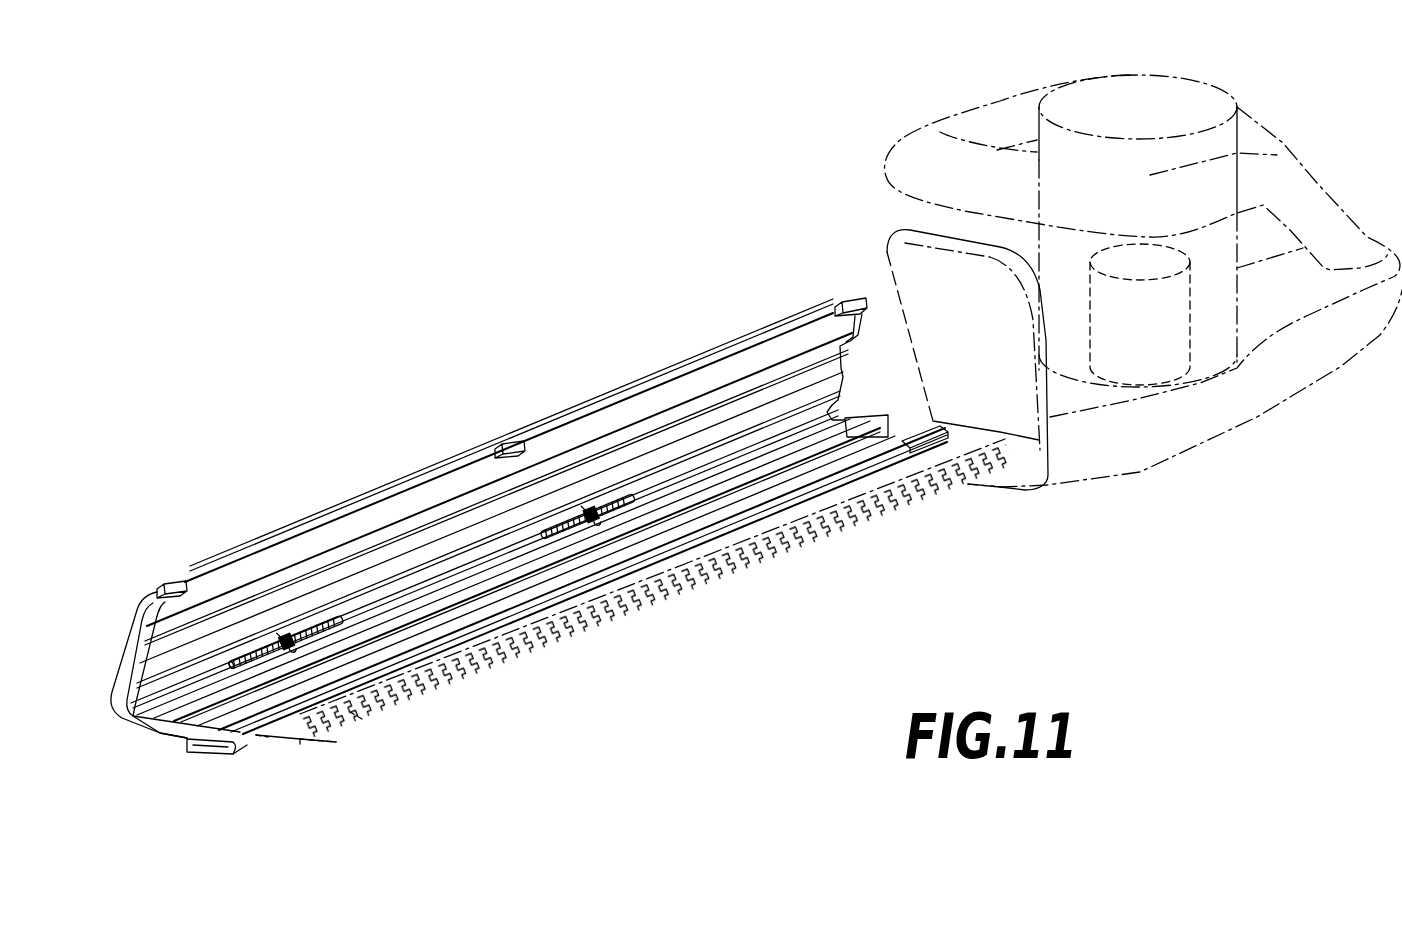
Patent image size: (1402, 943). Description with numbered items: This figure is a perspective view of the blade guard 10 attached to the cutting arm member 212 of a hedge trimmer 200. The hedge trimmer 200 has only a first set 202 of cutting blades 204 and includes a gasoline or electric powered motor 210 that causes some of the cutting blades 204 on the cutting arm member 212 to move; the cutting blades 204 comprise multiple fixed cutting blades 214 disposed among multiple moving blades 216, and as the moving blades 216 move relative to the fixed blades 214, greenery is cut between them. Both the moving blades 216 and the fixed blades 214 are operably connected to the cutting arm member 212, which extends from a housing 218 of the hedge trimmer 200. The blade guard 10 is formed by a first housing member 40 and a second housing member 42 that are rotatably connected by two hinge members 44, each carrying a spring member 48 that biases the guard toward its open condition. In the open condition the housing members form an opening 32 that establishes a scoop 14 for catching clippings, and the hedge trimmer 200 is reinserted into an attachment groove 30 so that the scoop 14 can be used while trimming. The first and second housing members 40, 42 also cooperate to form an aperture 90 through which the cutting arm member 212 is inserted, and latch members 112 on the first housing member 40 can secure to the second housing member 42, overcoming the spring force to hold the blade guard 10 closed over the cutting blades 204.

The blade guard 10 is at (605, 382).
The scoop 14 is at (693, 489).
The attachment groove 30 is at (218, 747).
The opening 32 is at (492, 582).
The first housing member 40 is at (117, 651).
The second housing member 42 is at (152, 756).
The hinge member 44 is at (295, 623).
The spring member 48 is at (260, 629).
The aperture 90 is at (852, 352).
The latch member 112 is at (178, 590).
The hedge trimmer 200 is at (855, 153).
The first set of cutting blades 202 is at (498, 683).
The cutting blades 204 is at (752, 592).
The motor 210 is at (1160, 337).
The cutting arm member 212 is at (268, 737).
The fixed cutting blades 214 is at (337, 734).
The moving blades 216 is at (357, 717).
The housing 218 is at (1129, 476).